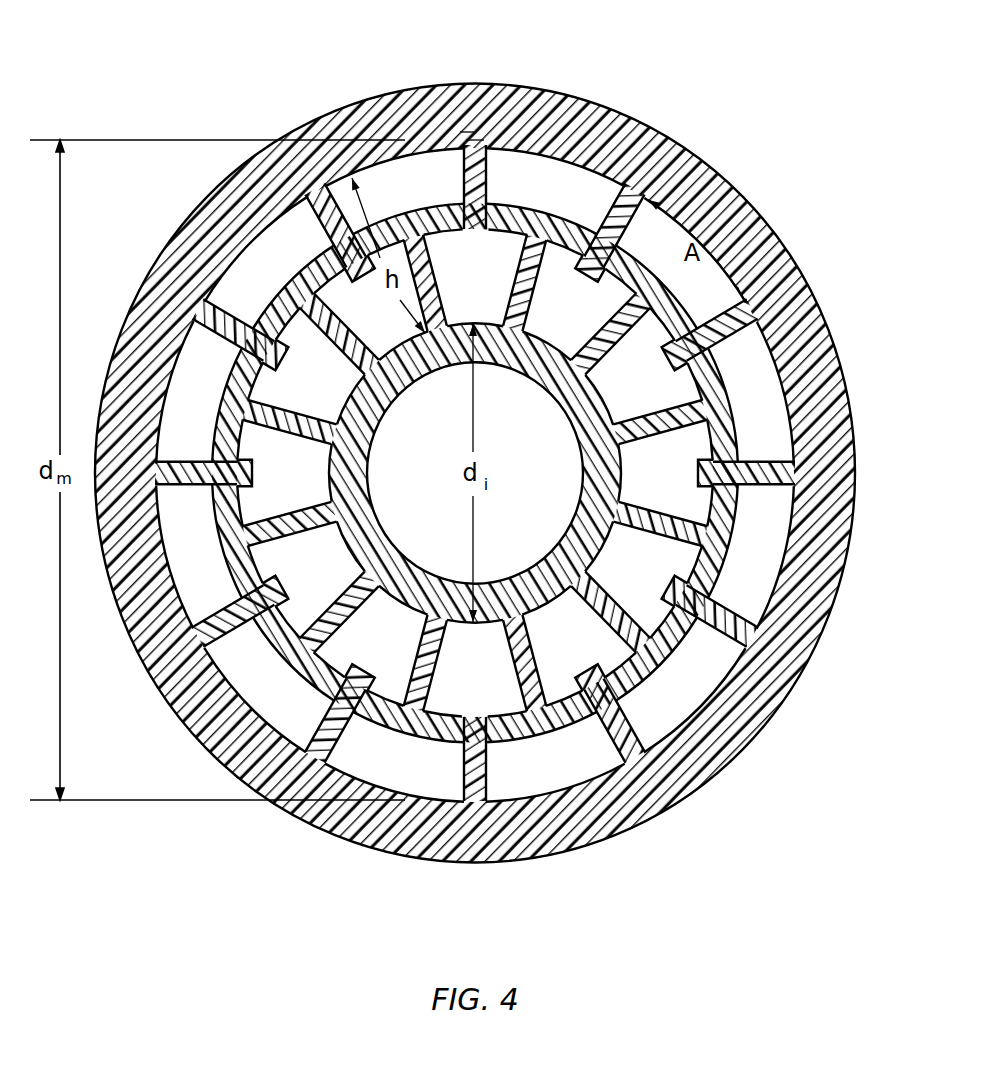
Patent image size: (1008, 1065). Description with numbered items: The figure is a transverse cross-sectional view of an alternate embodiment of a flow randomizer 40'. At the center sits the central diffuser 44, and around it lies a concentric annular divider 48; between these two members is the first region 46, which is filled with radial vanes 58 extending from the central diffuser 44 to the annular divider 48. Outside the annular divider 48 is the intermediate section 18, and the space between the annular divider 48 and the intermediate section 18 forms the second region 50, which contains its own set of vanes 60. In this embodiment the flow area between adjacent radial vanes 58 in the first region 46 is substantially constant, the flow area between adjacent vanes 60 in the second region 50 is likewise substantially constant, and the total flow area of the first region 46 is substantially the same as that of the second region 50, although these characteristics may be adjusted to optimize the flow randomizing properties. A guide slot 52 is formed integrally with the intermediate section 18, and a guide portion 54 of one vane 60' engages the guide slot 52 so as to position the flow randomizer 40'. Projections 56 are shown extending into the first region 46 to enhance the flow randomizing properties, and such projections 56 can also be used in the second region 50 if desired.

The intermediate section 18 is at (372, 95).
The flow randomizer 40' is at (500, 515).
The central diffuser 44 is at (377, 405).
The first region 46 is at (680, 463).
The annular divider 48 is at (783, 350).
The second region 50 is at (755, 538).
The guide slot 52 is at (467, 131).
The guide portion 54 is at (479, 140).
The projections 56 is at (250, 468).
The radial vanes 58 is at (419, 281).
The vanes 60 is at (475, 492).
The vane 60' is at (508, 187).